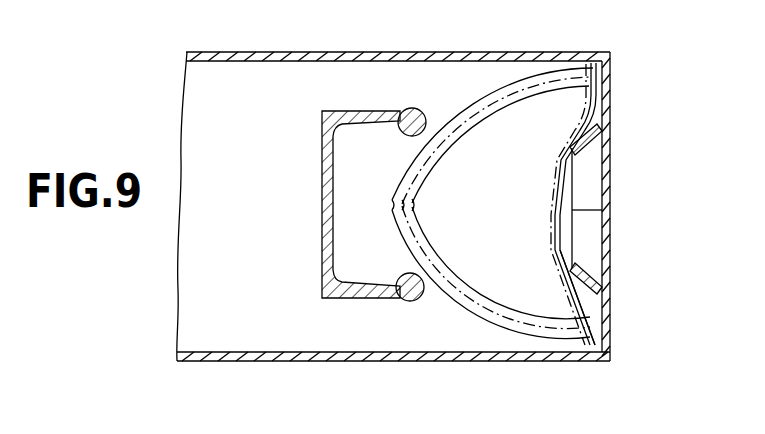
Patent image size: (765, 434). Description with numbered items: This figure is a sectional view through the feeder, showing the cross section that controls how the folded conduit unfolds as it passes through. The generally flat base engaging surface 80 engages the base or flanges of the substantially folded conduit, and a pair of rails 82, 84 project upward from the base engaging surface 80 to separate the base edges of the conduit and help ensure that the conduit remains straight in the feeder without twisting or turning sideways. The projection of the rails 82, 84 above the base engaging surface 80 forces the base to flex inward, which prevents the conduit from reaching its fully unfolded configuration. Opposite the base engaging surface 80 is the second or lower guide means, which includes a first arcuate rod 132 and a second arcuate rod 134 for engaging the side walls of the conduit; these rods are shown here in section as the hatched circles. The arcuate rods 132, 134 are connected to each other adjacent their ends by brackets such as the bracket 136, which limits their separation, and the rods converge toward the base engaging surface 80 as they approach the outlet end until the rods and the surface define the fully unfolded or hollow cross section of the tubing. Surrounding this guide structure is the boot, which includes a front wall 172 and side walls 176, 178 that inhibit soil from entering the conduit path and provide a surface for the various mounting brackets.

The side wall 176 is at (477, 59).
The side wall 178 is at (495, 362).
The bracket 136 is at (321, 235).
The first arcuate rod 132 is at (421, 111).
The second arcuate rod 134 is at (420, 300).
The base engaging surface 80 is at (600, 155).
The rail 84 is at (572, 147).
The rail 82 is at (571, 262).
The front wall 172 is at (598, 289).